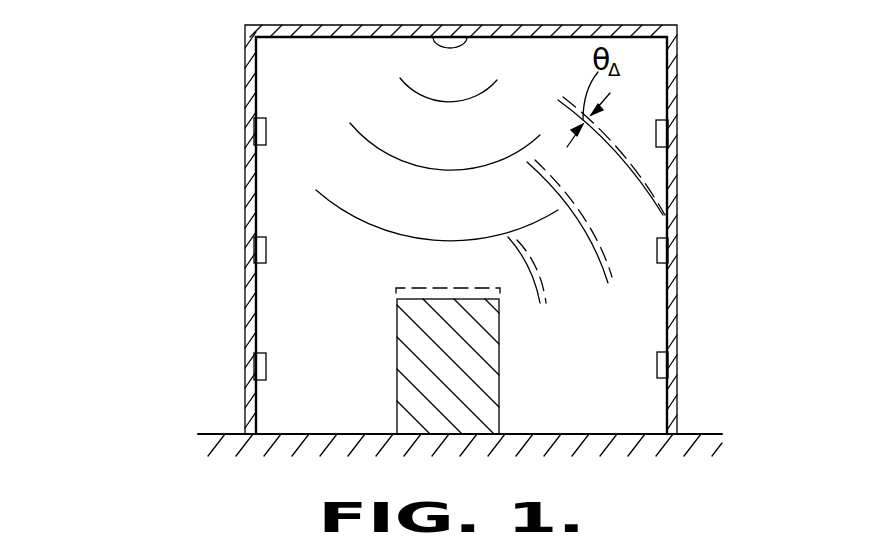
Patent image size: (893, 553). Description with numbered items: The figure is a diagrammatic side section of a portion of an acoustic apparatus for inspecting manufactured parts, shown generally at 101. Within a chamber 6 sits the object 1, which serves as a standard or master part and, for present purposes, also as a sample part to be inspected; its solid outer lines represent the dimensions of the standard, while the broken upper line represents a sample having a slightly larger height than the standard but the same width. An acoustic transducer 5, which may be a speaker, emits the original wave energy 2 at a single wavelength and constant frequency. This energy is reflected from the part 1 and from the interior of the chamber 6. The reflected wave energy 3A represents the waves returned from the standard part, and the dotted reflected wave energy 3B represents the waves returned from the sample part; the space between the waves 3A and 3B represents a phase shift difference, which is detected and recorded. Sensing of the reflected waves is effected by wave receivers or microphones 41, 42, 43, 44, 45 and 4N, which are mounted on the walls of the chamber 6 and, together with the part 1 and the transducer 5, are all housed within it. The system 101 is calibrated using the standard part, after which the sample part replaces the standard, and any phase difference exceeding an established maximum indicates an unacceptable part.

The object 1 is at (495, 382).
The original wave energy 2 is at (472, 97).
The reflected wave energy from the standard part 3A is at (605, 272).
The reflected wave energy from the sample part 3B is at (603, 244).
The wave receiver 41 is at (266, 128).
The wave receiver 42 is at (266, 252).
The wave receiver 43 is at (266, 367).
The wave receiver 44 is at (662, 135).
The wave receiver 45 is at (664, 250).
The wave receiver 4N is at (664, 365).
The acoustic transducer 5 is at (462, 47).
The chamber 6 is at (677, 93).
The apparatus for inspecting manufactured parts 101 is at (241, 302).